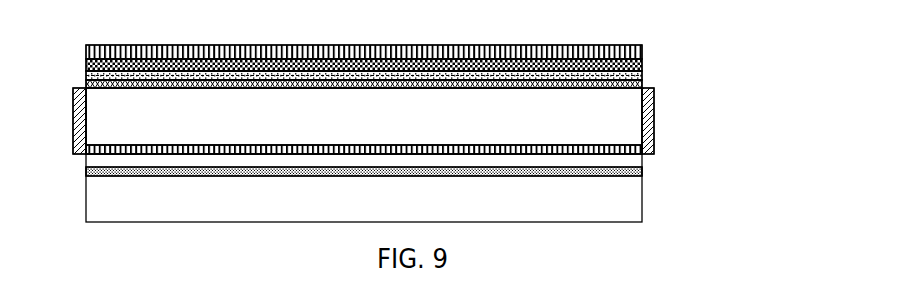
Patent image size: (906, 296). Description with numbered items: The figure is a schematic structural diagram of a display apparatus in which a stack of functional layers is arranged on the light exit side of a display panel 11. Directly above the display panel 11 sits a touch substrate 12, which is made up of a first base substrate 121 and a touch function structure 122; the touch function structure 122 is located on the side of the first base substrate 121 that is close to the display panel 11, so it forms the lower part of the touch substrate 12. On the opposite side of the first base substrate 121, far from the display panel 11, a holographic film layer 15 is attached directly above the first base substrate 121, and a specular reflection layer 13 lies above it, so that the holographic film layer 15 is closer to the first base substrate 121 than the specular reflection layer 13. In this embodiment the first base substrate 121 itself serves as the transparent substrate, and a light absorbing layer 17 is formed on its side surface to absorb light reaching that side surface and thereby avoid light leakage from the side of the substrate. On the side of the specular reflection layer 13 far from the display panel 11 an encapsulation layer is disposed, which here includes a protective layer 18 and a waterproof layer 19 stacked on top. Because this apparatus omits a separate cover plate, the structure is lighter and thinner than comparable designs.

The waterproof layer 19 is at (632, 40).
The protective layer 18 is at (626, 55).
The specular reflection layer 13 is at (624, 71).
The holographic film layer 15 is at (621, 85).
The light absorbing layer 17 is at (67, 115).
The touch substrate 12 is at (769, 103).
The first base substrate 121 is at (619, 115).
The touch function structure 122 is at (621, 149).
The display panel 11 is at (647, 157).